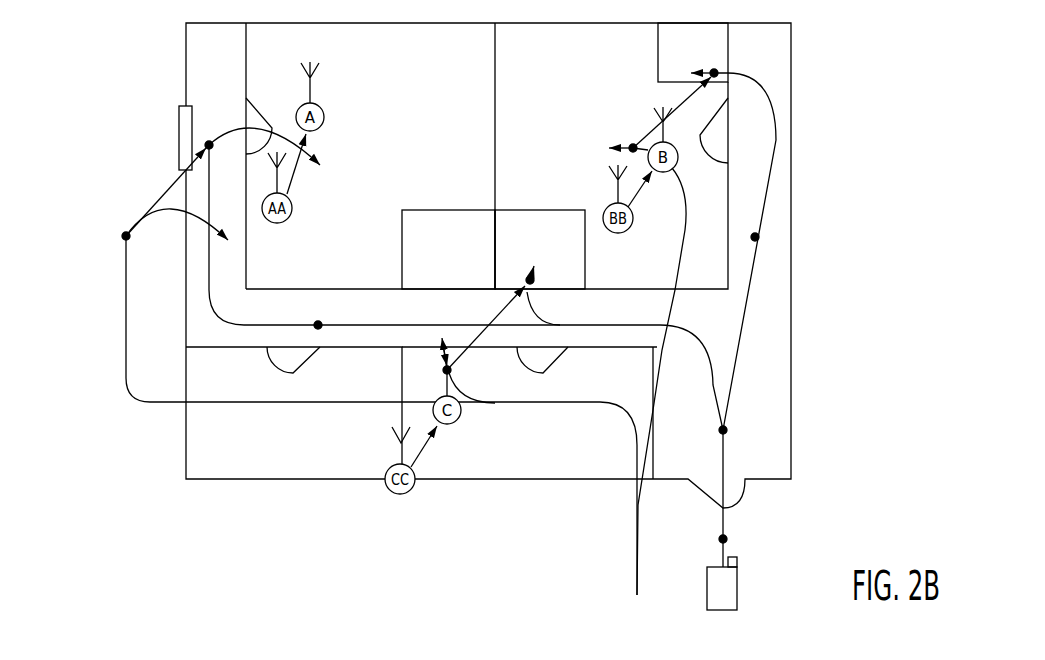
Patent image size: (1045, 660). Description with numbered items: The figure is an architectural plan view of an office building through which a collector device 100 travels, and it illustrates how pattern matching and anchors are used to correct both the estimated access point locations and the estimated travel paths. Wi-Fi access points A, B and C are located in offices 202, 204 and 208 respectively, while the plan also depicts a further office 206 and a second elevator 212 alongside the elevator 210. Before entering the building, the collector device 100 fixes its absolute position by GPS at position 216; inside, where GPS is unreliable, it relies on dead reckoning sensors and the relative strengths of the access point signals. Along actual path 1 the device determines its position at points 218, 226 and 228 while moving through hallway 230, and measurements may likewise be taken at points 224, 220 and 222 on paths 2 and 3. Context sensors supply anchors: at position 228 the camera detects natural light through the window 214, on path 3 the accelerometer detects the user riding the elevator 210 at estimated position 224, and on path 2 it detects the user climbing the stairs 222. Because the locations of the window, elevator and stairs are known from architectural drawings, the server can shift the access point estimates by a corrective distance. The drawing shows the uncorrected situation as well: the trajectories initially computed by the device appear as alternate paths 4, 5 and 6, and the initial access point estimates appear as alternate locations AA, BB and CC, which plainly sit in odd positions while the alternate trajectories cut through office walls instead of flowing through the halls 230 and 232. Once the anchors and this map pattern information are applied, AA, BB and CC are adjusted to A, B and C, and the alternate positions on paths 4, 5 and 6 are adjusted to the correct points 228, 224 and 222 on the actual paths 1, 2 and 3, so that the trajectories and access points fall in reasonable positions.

The collector device 100 is at (740, 589).
The office 202 is at (361, 128).
The office 204 is at (557, 129).
The room / area 206 is at (280, 454).
The office 208 is at (524, 459).
The elevator 210 is at (524, 259).
The elevator 212 is at (435, 271).
The window 214 is at (178, 132).
The position 216 is at (726, 538).
The point 218 is at (726, 429).
The point 220 is at (757, 243).
The stairs 222 is at (717, 71).
The estimated position 224 is at (536, 281).
The point 226 is at (316, 323).
The position 228 is at (210, 141).
The hallway 230 is at (471, 319).
The hall 232 is at (739, 161).
The path 1 is at (322, 168).
The path 2 is at (688, 70).
The path 3 is at (538, 270).
The alternate path 4 is at (228, 250).
The alternate path 5 is at (606, 149).
The alternate path 6 is at (436, 338).